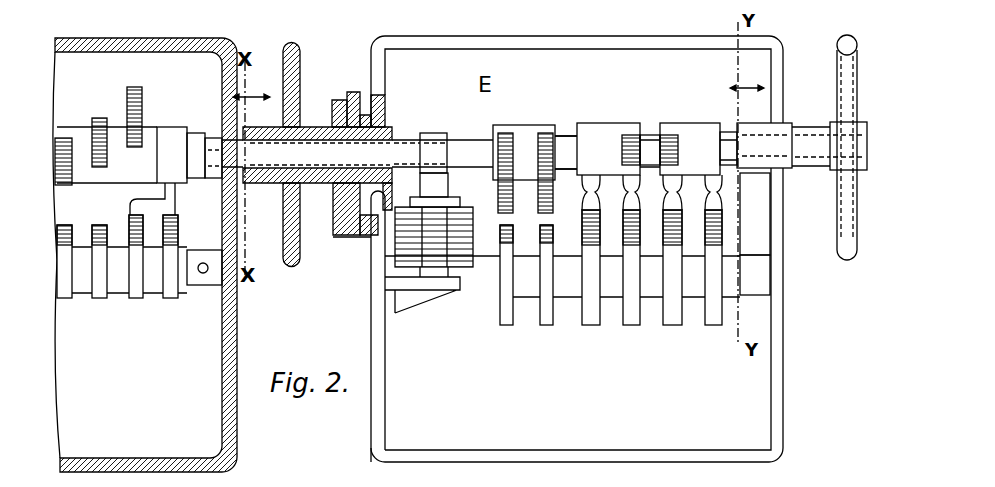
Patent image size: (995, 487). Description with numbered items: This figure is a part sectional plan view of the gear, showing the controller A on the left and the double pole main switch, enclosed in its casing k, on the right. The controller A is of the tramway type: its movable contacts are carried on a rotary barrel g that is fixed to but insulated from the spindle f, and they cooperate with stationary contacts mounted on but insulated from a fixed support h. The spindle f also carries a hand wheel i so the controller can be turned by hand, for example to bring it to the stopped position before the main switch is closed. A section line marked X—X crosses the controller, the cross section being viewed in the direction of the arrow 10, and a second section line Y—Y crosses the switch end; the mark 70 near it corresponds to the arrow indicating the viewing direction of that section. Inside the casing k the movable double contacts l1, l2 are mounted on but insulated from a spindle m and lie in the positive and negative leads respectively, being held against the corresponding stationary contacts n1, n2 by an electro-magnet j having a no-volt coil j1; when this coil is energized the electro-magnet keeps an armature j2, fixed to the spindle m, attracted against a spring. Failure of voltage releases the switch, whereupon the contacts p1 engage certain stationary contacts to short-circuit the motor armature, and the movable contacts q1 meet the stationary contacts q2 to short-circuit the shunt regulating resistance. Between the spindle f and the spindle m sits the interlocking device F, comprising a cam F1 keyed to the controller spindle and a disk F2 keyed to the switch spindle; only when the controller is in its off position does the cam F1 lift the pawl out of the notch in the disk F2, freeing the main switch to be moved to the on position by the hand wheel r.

The controller A is at (145, 255).
The spindle f is at (210, 183).
The rotary barrel g is at (118, 180).
The fixed support h is at (192, 285).
The arrow 10 is at (254, 88).
The hand wheel i is at (293, 52).
The interlocking device F is at (335, 100).
The cam F1 is at (335, 118).
The disk F2 is at (356, 92).
The casing k is at (590, 452).
The electro-magnet j is at (452, 202).
The no-volt coil j1 is at (471, 222).
The armature j2 is at (436, 187).
The gear wheel q is at (543, 150).
The movable contacts q1 is at (510, 175).
The stationary contacts q2 is at (507, 242).
The spindle m is at (569, 160).
The contacts p1 is at (665, 140).
The double contacts l1 is at (590, 190).
The double contacts l2 is at (708, 188).
The stationary contacts n1 is at (596, 234).
The stationary contacts n2 is at (712, 228).
The dimension 70 is at (747, 78).
The hand wheel r is at (840, 214).